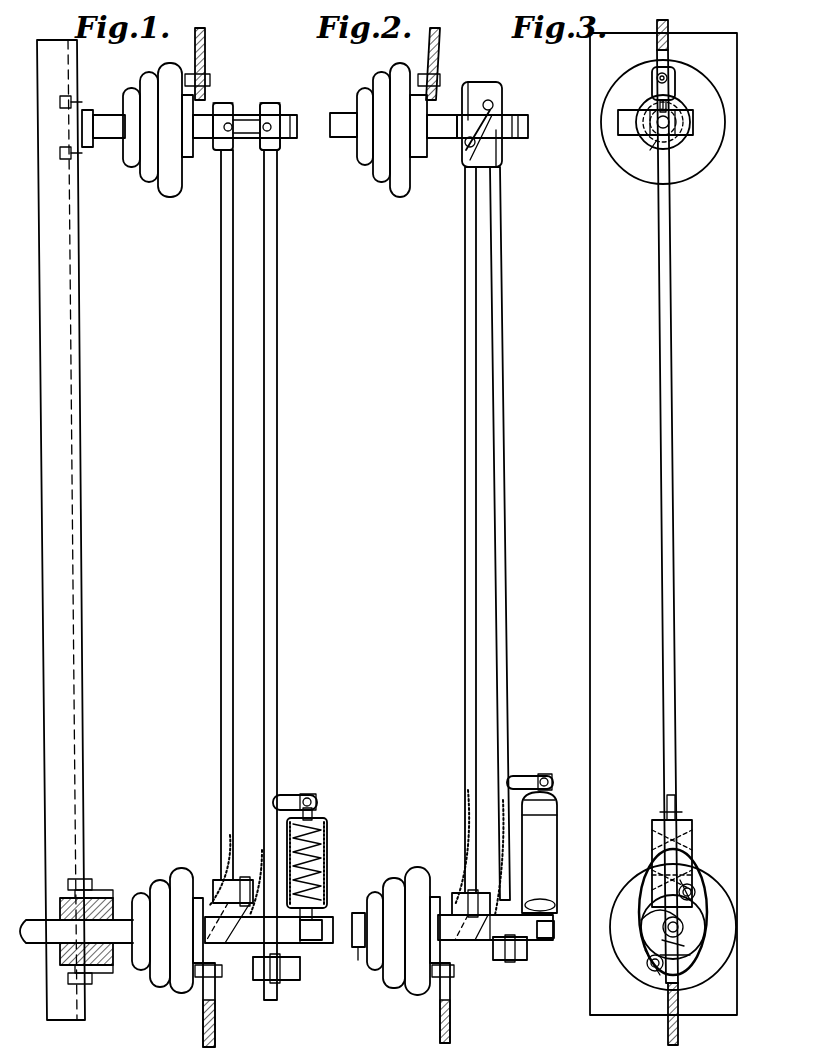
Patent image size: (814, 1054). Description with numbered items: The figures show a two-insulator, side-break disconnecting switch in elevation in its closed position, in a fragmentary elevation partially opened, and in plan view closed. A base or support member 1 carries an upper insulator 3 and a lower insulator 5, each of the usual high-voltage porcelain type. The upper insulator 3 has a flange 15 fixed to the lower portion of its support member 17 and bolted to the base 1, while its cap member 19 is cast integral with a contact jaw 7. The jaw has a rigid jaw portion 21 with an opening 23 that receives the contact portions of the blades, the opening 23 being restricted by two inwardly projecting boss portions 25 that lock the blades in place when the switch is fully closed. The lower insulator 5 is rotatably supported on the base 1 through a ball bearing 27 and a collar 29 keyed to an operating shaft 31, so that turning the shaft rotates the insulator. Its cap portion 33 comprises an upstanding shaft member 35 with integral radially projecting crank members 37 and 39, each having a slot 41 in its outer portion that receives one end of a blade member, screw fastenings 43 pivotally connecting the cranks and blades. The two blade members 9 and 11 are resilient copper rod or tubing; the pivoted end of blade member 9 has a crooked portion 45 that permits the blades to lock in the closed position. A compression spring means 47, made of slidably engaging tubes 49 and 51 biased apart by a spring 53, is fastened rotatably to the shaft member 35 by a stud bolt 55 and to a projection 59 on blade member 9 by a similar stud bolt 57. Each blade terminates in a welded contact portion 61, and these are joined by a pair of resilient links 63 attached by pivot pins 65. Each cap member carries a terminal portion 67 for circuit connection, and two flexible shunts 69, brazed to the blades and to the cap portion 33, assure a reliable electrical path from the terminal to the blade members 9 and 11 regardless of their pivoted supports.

In FIG. 1, the base or support member 1 is at (82, 606).
In FIG. 3, the base or support member 1 is at (590, 532).
In FIG. 1, the upper insulator 3 is at (165, 195).
In FIG. 2, the upper insulator 3 is at (400, 195).
In FIG. 3, the upper insulator 3 is at (620, 165).
In FIG. 1, the lower insulator 5 is at (172, 868).
In FIG. 2, the lower insulator 5 is at (410, 868).
In FIG. 3, the lower insulator 5 is at (630, 972).
In FIG. 1, the contact jaw 7 is at (262, 64).
In FIG. 2, the contact jaw 7 is at (494, 56).
In FIG. 3, the contact jaw 7 is at (635, 100).
In FIG. 1, the blade member 9 is at (278, 462).
In FIG. 2, the blade member 9 is at (506, 456).
In FIG. 3, the blade member 9 is at (675, 472).
In FIG. 1, the blade member 11 is at (221, 462).
In FIG. 2, the blade member 11 is at (465, 455).
In FIG. 1, the flange 15 is at (90, 150).
In FIG. 1, the support member 17 is at (108, 115).
In FIG. 2, the support member 17 is at (346, 138).
In FIG. 1, the cap member 19 is at (190, 160).
In FIG. 2, the cap member 19 is at (423, 158).
In FIG. 3, the cap member 19 is at (683, 148).
In FIG. 1, the rigid jaw portion 21 is at (290, 118).
In FIG. 2, the rigid jaw portion 21 is at (520, 115).
In FIG. 3, the rigid jaw portion 21 is at (618, 122).
In FIG. 1, the opening 23 is at (262, 104).
In FIG. 2, the opening 23 is at (484, 86).
In FIG. 3, the opening 23 is at (645, 148).
In FIG. 1, the boss portions 25 is at (216, 104).
In FIG. 2, the boss portions 25 is at (468, 96).
In FIG. 1, the ball bearing 27 is at (103, 898).
In FIG. 2, the ball bearing 27 is at (358, 913).
In FIG. 1, the collar 29 is at (62, 950).
In FIG. 1, the operating shaft 31 is at (30, 918).
In FIG. 2, the operating shaft 31 is at (358, 950).
In FIG. 1, the cap portion 33 is at (200, 917).
In FIG. 2, the cap portion 33 is at (437, 912).
In FIG. 3, the cap portion 33 is at (640, 920).
In FIG. 1, the upstanding shaft member 35 is at (298, 943).
In FIG. 2, the upstanding shaft member 35 is at (486, 945).
In FIG. 3, the upstanding shaft member 35 is at (683, 927).
In FIG. 1, the crank member 37 is at (236, 943).
In FIG. 2, the crank member 37 is at (468, 941).
In FIG. 3, the crank member 37 is at (695, 880).
In FIG. 1, the crank member 39 is at (258, 975).
In FIG. 2, the crank member 39 is at (505, 961).
In FIG. 3, the crank member 39 is at (645, 950).
In FIG. 1, the slot 41 is at (242, 880).
In FIG. 2, the slot 41 is at (478, 890).
In FIG. 1, the screw fastenings 43 is at (216, 880).
In FIG. 2, the screw fastenings 43 is at (455, 893).
In FIG. 3, the screw fastenings 43 is at (696, 892).
In FIG. 3, the crooked portion 45 is at (686, 958).
In FIG. 1, the compression spring means 47 is at (325, 832).
In FIG. 2, the compression spring means 47 is at (545, 842).
In FIG. 3, the compression spring means 47 is at (652, 835).
In FIG. 1, the tube 49 is at (312, 815).
In FIG. 2, the tube 49 is at (556, 806).
In FIG. 3, the tube 49 is at (678, 812).
In FIG. 1, the tube 51 is at (330, 866).
In FIG. 2, the tube 51 is at (557, 866).
In FIG. 3, the tube 51 is at (652, 870).
In FIG. 1, the spring 53 is at (324, 842).
In FIG. 1, the stud bolt 55 is at (320, 928).
In FIG. 2, the stud bolt 55 is at (554, 928).
In FIG. 3, the stud bolt 55 is at (682, 936).
In FIG. 1, the stud bolt 57 is at (308, 794).
In FIG. 2, the stud bolt 57 is at (548, 775).
In FIG. 3, the stud bolt 57 is at (674, 797).
In FIG. 1, the projection 59 is at (285, 795).
In FIG. 2, the projection 59 is at (516, 777).
In FIG. 1, the contact portion 61 is at (218, 148).
In FIG. 2, the contact portion 61 is at (466, 162).
In FIG. 3, the contact portion 61 is at (672, 105).
In FIG. 1, the links 63 is at (250, 140).
In FIG. 2, the links 63 is at (468, 146).
In FIG. 3, the links 63 is at (675, 110).
In FIG. 1, the pivot pins 65 is at (230, 122).
In FIG. 2, the pivot pins 65 is at (492, 101).
In FIG. 3, the pivot pins 65 is at (695, 122).
In FIG. 1, the terminal portion 67 is at (197, 80).
In FIG. 2, the terminal portion 67 is at (437, 86).
In FIG. 3, the terminal portion 67 is at (668, 82).
In FIG. 1, the flexible shunts 69 is at (226, 845).
In FIG. 2, the flexible shunts 69 is at (466, 842).
In FIG. 3, the flexible shunts 69 is at (696, 860).